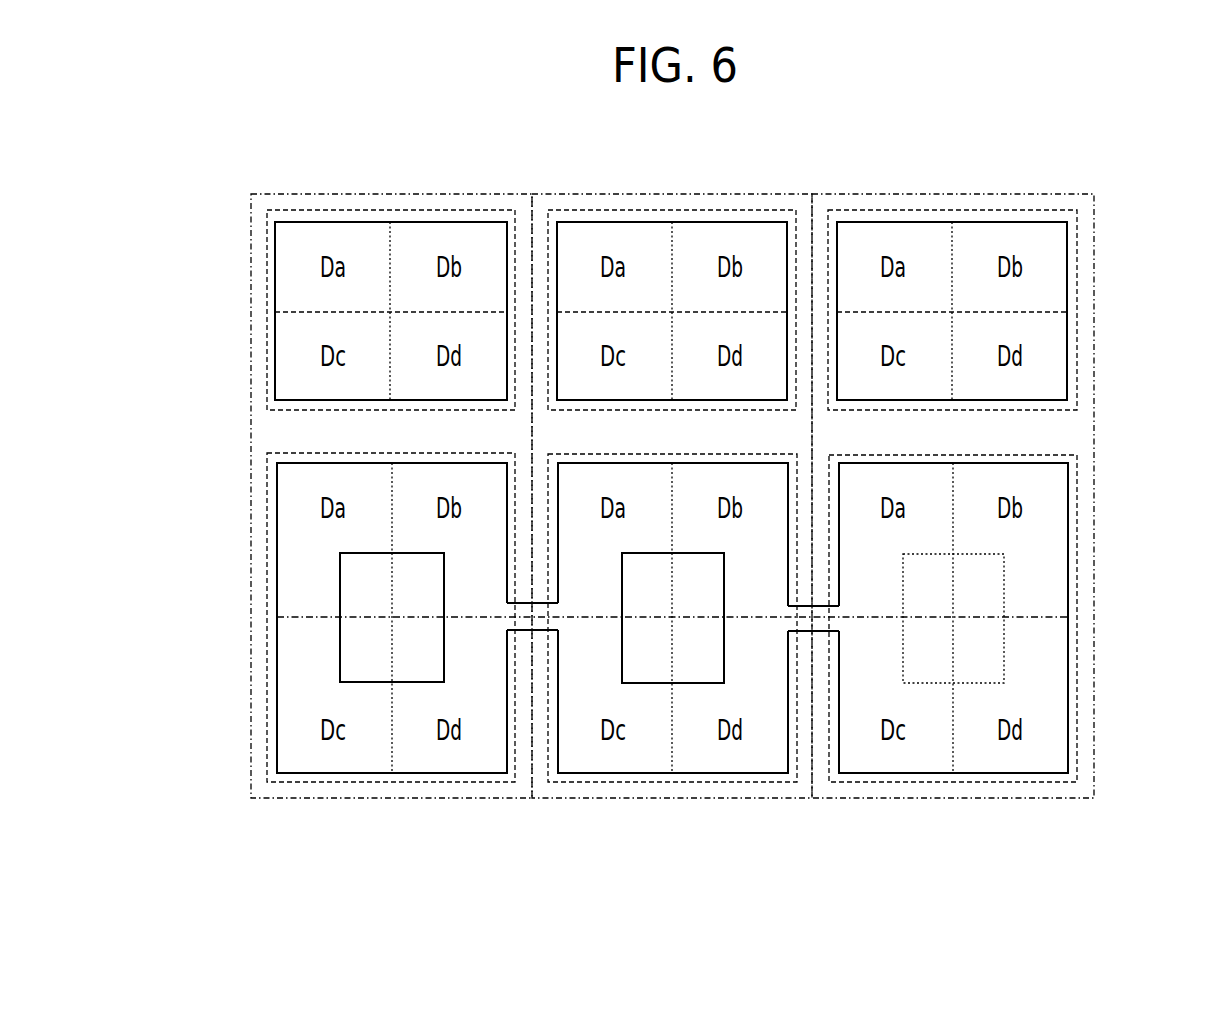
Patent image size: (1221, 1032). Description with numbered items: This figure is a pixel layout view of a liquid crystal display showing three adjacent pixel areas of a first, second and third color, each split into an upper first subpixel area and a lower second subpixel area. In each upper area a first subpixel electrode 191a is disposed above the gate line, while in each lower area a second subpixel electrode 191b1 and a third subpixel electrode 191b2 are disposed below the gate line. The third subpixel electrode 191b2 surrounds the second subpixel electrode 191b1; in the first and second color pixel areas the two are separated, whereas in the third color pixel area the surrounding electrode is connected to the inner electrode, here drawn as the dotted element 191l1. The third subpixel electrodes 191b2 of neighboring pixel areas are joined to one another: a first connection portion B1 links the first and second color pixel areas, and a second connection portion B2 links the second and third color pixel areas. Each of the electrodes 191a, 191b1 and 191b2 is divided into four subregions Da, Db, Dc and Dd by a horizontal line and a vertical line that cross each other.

The first subpixel electrode 191a is at (275, 268).
The third subpixel electrode 191b2 is at (674, 661).
The second subpixel electrode 191b1 is at (340, 590).
The pixel electrode center portion (blue) 191l1 is at (1004, 592).
The first connection portion B1 is at (542, 620).
The second connection portion B2 is at (822, 620).